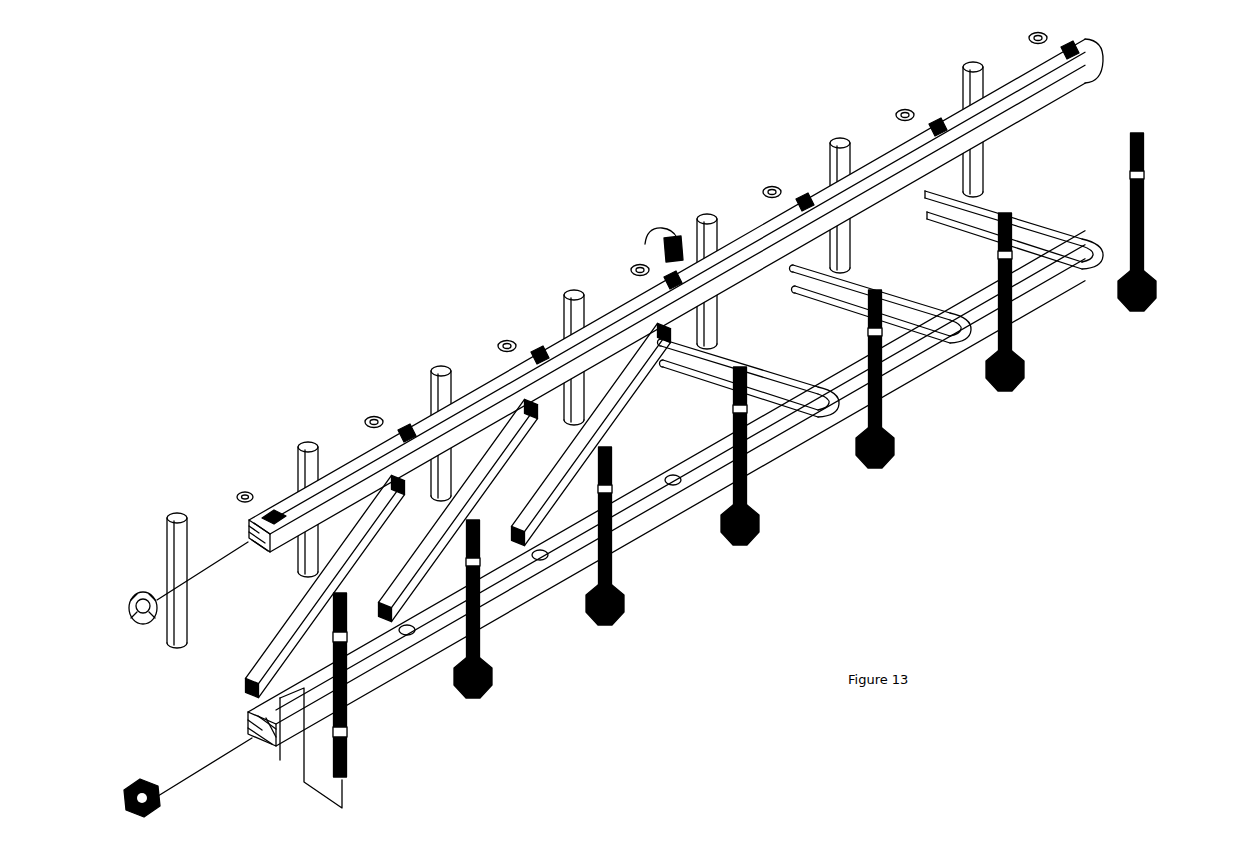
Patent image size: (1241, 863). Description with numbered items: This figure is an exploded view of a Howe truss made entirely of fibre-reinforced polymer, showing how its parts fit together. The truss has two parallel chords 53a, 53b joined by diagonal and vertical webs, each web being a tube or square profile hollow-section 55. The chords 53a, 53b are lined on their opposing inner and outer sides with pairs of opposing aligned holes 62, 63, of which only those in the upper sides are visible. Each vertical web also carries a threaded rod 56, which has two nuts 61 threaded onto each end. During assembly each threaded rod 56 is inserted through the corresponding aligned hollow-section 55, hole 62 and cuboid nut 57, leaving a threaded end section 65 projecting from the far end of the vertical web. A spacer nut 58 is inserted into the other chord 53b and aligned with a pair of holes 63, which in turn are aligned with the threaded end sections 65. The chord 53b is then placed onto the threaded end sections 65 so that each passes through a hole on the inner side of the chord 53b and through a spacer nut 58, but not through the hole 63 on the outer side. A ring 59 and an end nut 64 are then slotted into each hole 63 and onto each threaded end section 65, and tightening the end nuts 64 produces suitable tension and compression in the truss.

The chord 53a is at (1068, 278).
The chord 53b is at (1083, 78).
The tube or square profile hollow-section 55 is at (712, 334).
The threaded rod 56 is at (747, 473).
The cuboid nut 57 is at (158, 796).
The spacer nut 58 is at (130, 596).
The ring 59 is at (244, 492).
The nut 61 is at (344, 637).
The hole 62 is at (274, 707).
The hole 63 is at (277, 507).
The end nut 64 is at (405, 430).
The threaded end section 65 is at (356, 592).